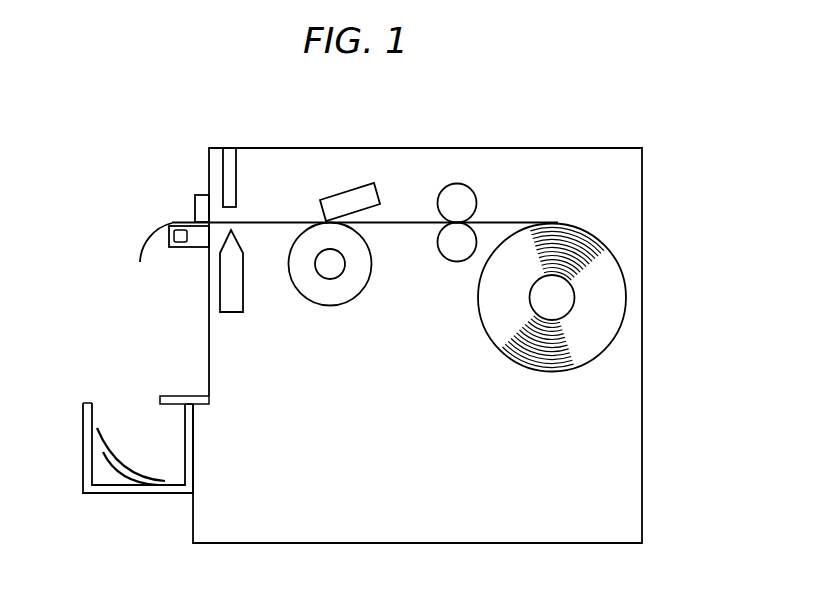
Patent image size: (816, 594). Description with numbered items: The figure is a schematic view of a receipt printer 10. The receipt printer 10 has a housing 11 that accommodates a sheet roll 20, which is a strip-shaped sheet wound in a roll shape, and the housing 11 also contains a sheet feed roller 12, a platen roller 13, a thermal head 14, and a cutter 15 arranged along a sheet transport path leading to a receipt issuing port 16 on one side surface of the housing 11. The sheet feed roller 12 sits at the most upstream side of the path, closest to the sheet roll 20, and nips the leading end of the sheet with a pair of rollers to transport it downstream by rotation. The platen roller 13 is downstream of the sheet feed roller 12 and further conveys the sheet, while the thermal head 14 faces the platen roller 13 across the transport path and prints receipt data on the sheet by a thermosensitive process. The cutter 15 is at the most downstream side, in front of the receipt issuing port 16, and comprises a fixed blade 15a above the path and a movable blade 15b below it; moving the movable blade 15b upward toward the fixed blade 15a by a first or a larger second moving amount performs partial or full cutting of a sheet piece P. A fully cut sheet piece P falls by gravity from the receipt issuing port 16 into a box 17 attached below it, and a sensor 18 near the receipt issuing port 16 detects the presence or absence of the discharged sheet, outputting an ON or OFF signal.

The receipt printer 10 is at (433, 309).
The housing 11 is at (642, 383).
The sheet feed roller 12 is at (456, 262).
The platen roller 13 is at (328, 307).
The thermal head 14 is at (378, 194).
The cutter 15 is at (350, 250).
The fixed blade 15a is at (229, 166).
The movable blade 15b is at (230, 313).
The receipt issuing port 16 is at (190, 216).
The box 17 is at (105, 444).
The sensor 18 is at (181, 248).
The sheet roll 20 is at (538, 373).
The sheet piece P is at (115, 456).